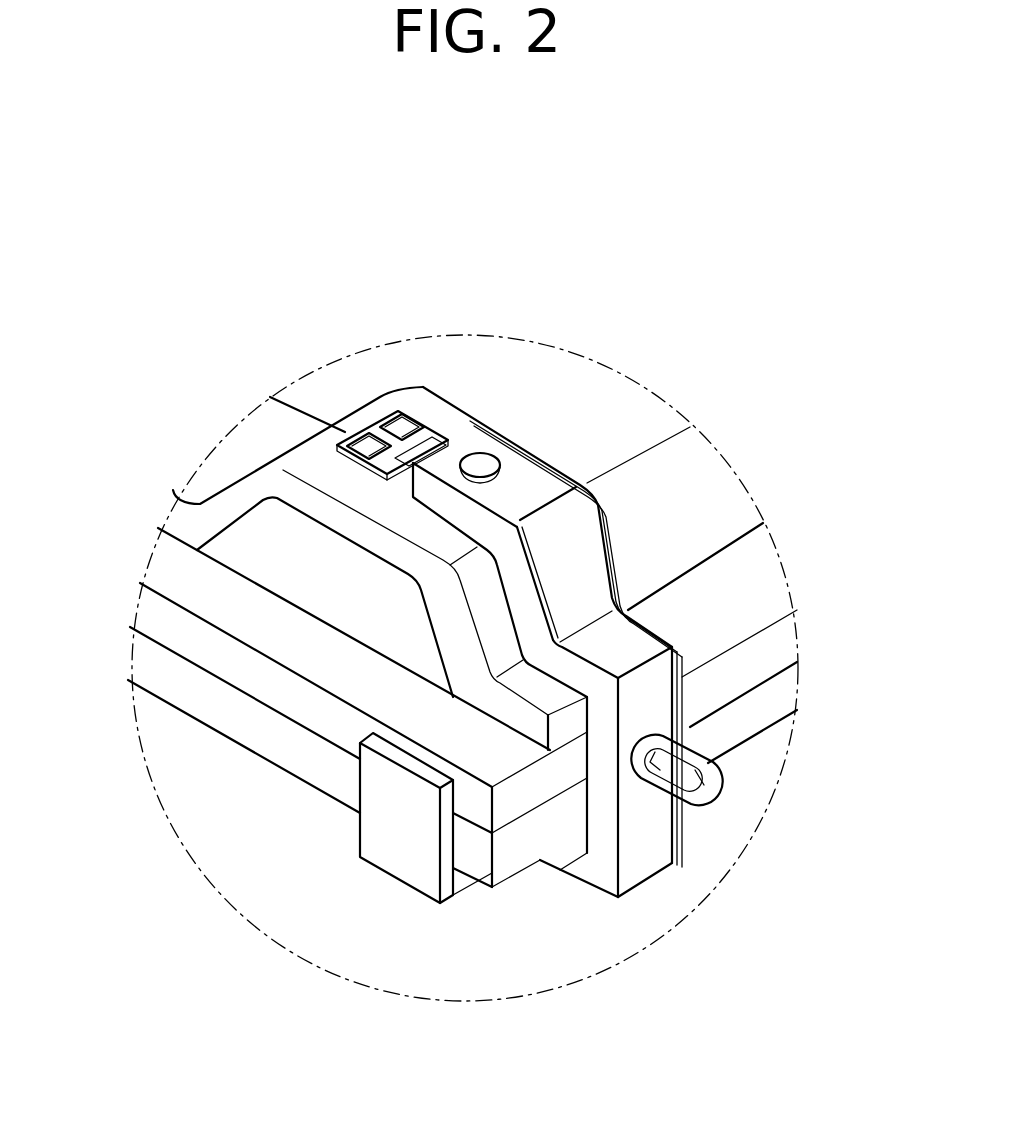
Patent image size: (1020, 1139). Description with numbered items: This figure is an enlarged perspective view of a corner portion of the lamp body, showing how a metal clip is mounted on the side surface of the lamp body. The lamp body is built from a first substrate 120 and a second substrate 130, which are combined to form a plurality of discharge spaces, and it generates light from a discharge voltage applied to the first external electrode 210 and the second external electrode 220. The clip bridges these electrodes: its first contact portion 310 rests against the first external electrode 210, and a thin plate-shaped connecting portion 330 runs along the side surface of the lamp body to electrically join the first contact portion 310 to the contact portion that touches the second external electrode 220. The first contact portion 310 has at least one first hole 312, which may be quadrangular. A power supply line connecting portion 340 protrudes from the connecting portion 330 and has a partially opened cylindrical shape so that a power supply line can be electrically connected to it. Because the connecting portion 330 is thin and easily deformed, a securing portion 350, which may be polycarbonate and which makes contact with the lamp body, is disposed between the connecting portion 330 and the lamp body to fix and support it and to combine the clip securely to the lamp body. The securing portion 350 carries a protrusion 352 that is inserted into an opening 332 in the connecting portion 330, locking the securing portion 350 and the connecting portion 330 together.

The first substrate 120 is at (232, 711).
The second substrate 130 is at (191, 638).
The first external electrode 210 is at (312, 460).
The second external electrode 220 is at (560, 860).
The first contact portion 310 is at (335, 373).
The first hole 312 is at (398, 432).
The connecting portion 330 is at (660, 591).
The opening 332 is at (533, 455).
The power supply line connecting portion 340 is at (700, 787).
The securing portion 350 is at (602, 843).
The protrusion 352 is at (481, 466).